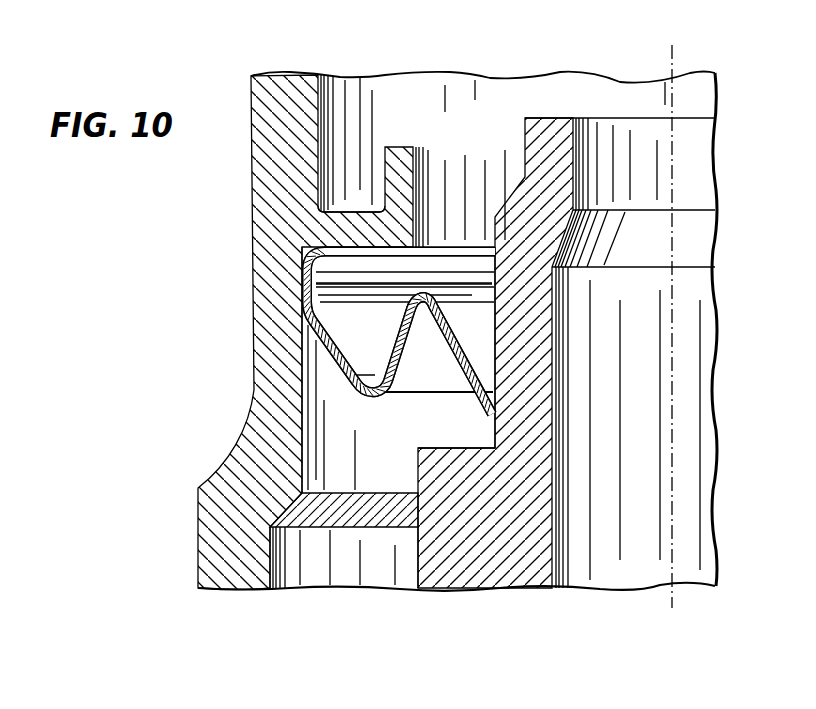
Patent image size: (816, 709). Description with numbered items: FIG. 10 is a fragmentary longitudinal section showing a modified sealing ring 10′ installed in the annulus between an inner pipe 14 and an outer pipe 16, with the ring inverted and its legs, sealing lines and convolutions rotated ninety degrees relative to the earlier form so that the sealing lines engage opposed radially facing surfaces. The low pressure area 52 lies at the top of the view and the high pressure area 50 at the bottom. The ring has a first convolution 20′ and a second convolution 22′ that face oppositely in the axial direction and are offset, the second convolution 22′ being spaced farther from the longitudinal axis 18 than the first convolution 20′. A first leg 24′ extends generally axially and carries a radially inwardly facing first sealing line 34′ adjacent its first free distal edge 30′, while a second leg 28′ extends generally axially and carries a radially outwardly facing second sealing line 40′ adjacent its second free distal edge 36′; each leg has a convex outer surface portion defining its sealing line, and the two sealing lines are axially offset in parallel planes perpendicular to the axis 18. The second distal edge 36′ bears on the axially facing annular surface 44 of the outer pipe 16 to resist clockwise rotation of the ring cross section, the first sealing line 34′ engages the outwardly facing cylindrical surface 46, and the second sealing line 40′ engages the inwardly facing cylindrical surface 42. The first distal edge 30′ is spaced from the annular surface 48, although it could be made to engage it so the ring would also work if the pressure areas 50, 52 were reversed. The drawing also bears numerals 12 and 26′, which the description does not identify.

The sealing ring 10′ is at (294, 345).
The first member 12 is at (285, 600).
The inner pipe 14 is at (533, 603).
The outer pipe 16 is at (249, 116).
The longitudinal axis 18 is at (676, 58).
The first convolution 20′ is at (437, 270).
The second convolution 22′ is at (352, 414).
The first leg 24′ is at (458, 376).
The inner leg of seal 26′ is at (412, 374).
The second leg 28′ is at (328, 372).
The first free distal edge 30′ is at (485, 423).
The first sealing line 34′ is at (510, 396).
The second free distal edge 36′ is at (324, 248).
The second sealing line 40′ is at (290, 293).
The inwardly facing cylindrical surface 42 is at (305, 374).
The axially facing annular surface 44 is at (366, 262).
The outwardly facing cylindrical surface 46 is at (492, 303).
The annular surface 48 is at (437, 448).
The high pressure area 50 is at (353, 572).
The low pressure area 52 is at (460, 95).